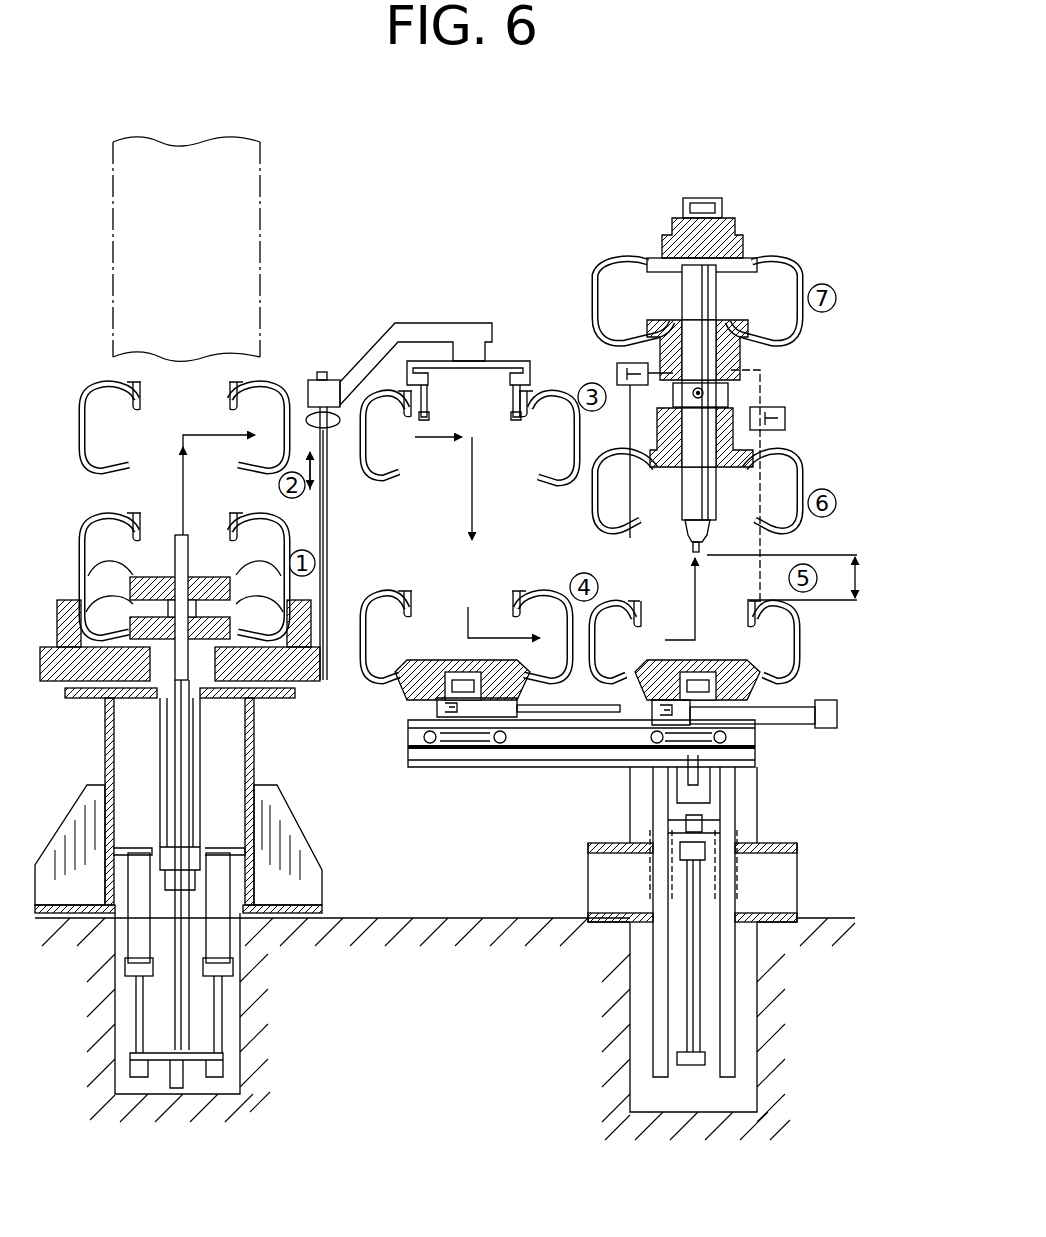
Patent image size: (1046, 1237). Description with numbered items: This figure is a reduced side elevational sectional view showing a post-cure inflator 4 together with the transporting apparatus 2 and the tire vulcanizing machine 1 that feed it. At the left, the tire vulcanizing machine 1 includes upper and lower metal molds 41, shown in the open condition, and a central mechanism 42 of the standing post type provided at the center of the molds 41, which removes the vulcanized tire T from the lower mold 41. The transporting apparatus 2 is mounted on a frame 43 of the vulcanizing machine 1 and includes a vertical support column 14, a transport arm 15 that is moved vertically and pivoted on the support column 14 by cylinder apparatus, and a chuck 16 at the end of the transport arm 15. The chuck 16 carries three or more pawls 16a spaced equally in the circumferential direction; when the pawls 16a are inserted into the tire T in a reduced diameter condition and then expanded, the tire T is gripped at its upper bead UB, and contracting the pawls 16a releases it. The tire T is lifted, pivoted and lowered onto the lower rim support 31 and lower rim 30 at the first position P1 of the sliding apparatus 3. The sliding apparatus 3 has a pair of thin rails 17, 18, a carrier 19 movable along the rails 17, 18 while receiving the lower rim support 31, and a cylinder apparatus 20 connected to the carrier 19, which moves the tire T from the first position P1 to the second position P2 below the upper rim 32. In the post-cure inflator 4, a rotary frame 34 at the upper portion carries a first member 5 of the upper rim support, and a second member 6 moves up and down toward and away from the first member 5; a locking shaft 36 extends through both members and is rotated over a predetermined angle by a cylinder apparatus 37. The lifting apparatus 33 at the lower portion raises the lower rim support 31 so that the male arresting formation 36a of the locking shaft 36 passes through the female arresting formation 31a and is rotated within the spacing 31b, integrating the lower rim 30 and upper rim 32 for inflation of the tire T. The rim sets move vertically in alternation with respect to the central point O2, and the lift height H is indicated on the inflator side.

The tire vulcanizing machine 1 is at (272, 957).
The transporting apparatus 2 is at (322, 358).
The sliding apparatus 3 is at (485, 768).
The post-cure inflator 4 is at (588, 965).
The first member of upper rim support 5 is at (742, 440).
The second member of upper rim support 6 is at (748, 468).
The vertical support column 14 is at (330, 512).
The transport arm 15 is at (437, 322).
The chuck 16 is at (518, 357).
The pawls 16a is at (428, 399).
The rail 17 is at (570, 742).
The rail 18 is at (572, 750).
The carrier 19 is at (745, 752).
The cylinder apparatus 20 is at (812, 706).
The lower rim 30 is at (420, 664).
The lower rim support 31 is at (418, 687).
The female arresting formation 31a is at (700, 690).
The spacing 31b is at (693, 678).
The upper rim 32 is at (660, 345).
The lifting apparatus 33 is at (748, 825).
The rotary frame 34 is at (728, 401).
The locking shaft 36 is at (745, 516).
The male arresting formation 36a is at (740, 547).
The cylinder apparatus 37 is at (785, 420).
The upper and lower metal molds 41 is at (300, 683).
The central mechanism 42 is at (200, 778).
The frame 43 is at (262, 236).
The first position P1 is at (460, 735).
The second position P2 is at (700, 735).
The central point O2 is at (705, 391).
The tire T is at (288, 528).
The upper bead UB is at (533, 449).
The lift height H is at (797, 577).